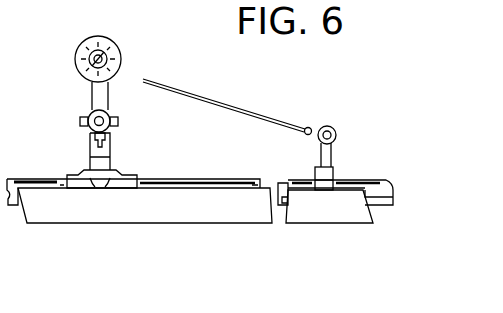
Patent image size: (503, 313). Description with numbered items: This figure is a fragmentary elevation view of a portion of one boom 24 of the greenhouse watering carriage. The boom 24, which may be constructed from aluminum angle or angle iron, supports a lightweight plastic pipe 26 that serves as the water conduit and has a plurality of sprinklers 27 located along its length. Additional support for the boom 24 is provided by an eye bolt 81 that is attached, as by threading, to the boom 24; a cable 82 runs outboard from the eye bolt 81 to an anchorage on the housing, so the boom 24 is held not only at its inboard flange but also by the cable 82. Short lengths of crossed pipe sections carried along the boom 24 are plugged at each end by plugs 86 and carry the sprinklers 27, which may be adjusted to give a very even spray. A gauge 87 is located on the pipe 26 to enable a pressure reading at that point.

The boom 24 is at (309, 218).
The pipe 26 is at (278, 183).
The sprinkler 27 is at (93, 141).
The eye bolt 81 is at (324, 126).
The cable 82 is at (222, 100).
The plug 86 is at (111, 120).
The gauge 87 is at (87, 41).